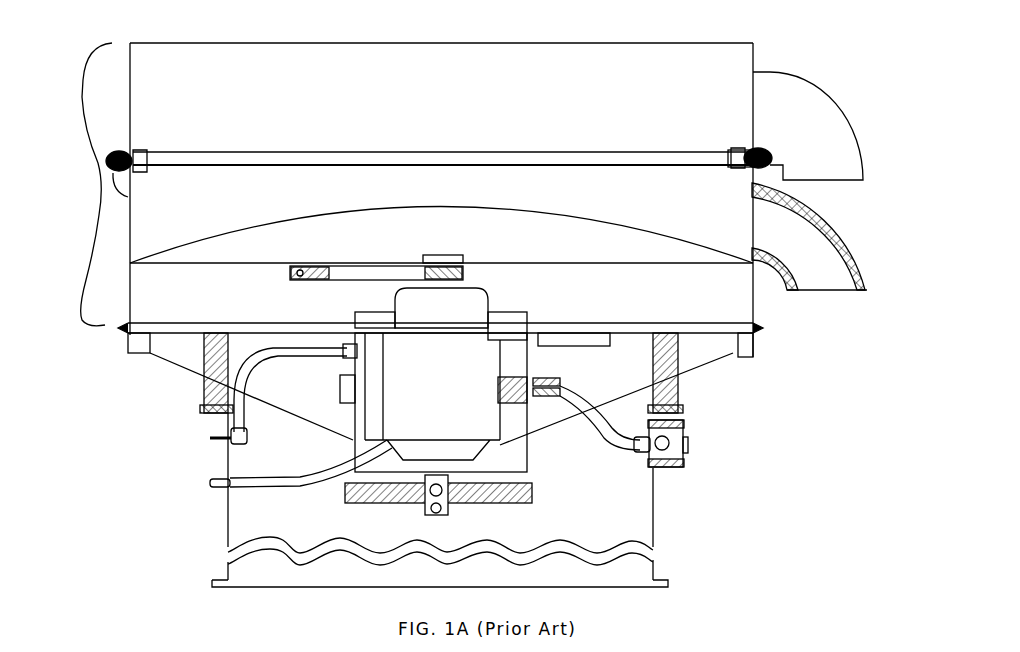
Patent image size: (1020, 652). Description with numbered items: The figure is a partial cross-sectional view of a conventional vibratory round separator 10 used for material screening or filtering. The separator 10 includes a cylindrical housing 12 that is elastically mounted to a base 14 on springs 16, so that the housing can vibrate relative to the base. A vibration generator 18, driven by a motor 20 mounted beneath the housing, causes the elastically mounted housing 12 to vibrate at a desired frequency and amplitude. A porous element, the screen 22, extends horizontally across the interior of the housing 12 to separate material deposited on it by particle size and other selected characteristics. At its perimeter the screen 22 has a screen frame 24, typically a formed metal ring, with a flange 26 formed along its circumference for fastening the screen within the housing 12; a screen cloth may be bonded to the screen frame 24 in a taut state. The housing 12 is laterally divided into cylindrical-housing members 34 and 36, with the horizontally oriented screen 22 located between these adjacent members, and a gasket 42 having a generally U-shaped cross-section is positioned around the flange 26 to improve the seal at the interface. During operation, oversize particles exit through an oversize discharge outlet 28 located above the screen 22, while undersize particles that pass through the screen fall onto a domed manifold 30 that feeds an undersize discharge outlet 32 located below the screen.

The vibratory round separator 10 is at (760, 22).
The cylindrical housing 12 is at (100, 197).
The base 14 is at (228, 516).
The springs 16 is at (205, 365).
The vibration generator 18 is at (535, 495).
The motor 20 is at (495, 310).
The screen 22 is at (518, 152).
The screen frame 24 is at (145, 150).
The flange 26 is at (745, 170).
The oversize discharge outlet 28 is at (808, 79).
The domed manifold 30 is at (618, 228).
The undersize discharge outlet 32 is at (822, 210).
The cylindrical-housing member 34 is at (298, 80).
The cylindrical-housing member 36 is at (292, 200).
The gasket 42 is at (128, 197).